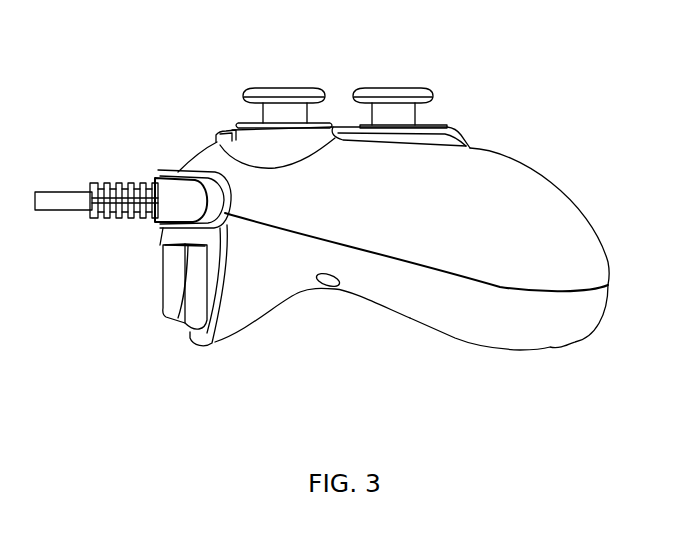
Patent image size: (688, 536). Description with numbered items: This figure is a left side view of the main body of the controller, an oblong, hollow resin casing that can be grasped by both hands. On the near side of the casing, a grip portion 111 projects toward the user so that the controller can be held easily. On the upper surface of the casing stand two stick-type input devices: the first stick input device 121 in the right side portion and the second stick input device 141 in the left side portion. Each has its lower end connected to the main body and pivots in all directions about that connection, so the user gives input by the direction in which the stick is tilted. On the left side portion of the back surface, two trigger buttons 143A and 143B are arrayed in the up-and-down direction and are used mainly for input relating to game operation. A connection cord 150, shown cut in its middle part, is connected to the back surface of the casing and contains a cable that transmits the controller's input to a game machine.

The grip portion 111 is at (514, 337).
The first stick input device 121 is at (398, 97).
The second stick input device 141 is at (287, 97).
The trigger button 143A is at (172, 207).
The trigger button 143B is at (168, 303).
The connection cord 150 is at (67, 198).